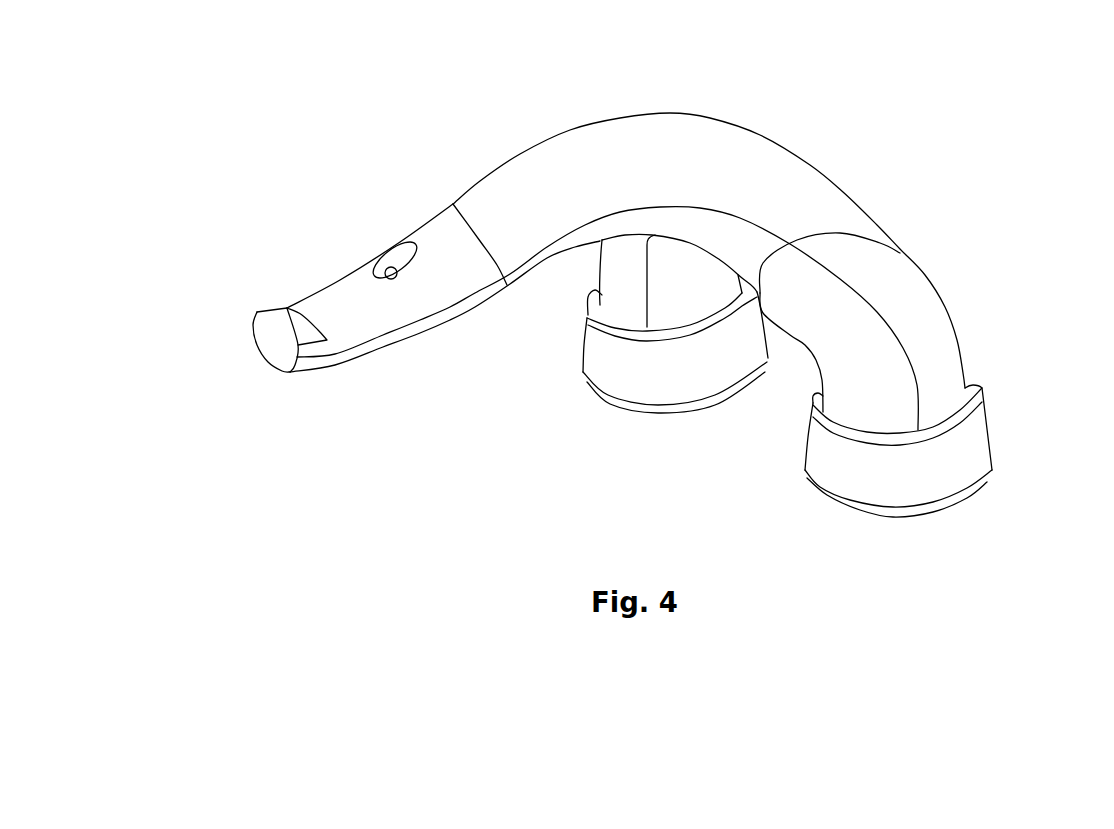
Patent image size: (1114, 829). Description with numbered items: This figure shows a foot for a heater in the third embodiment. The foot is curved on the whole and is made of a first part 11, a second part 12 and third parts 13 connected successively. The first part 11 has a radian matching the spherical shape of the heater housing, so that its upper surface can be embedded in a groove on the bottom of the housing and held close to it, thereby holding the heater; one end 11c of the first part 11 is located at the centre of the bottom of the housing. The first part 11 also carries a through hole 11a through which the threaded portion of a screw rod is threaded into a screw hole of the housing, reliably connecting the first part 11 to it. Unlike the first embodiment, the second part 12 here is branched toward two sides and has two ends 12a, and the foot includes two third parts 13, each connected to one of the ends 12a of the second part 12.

The first part 11 is at (337, 297).
The through hole 11a is at (395, 270).
The end of the first part 11c is at (257, 332).
The second part 12 is at (672, 132).
The ends of the second part 12a is at (622, 307).
The third part 13 is at (615, 392).